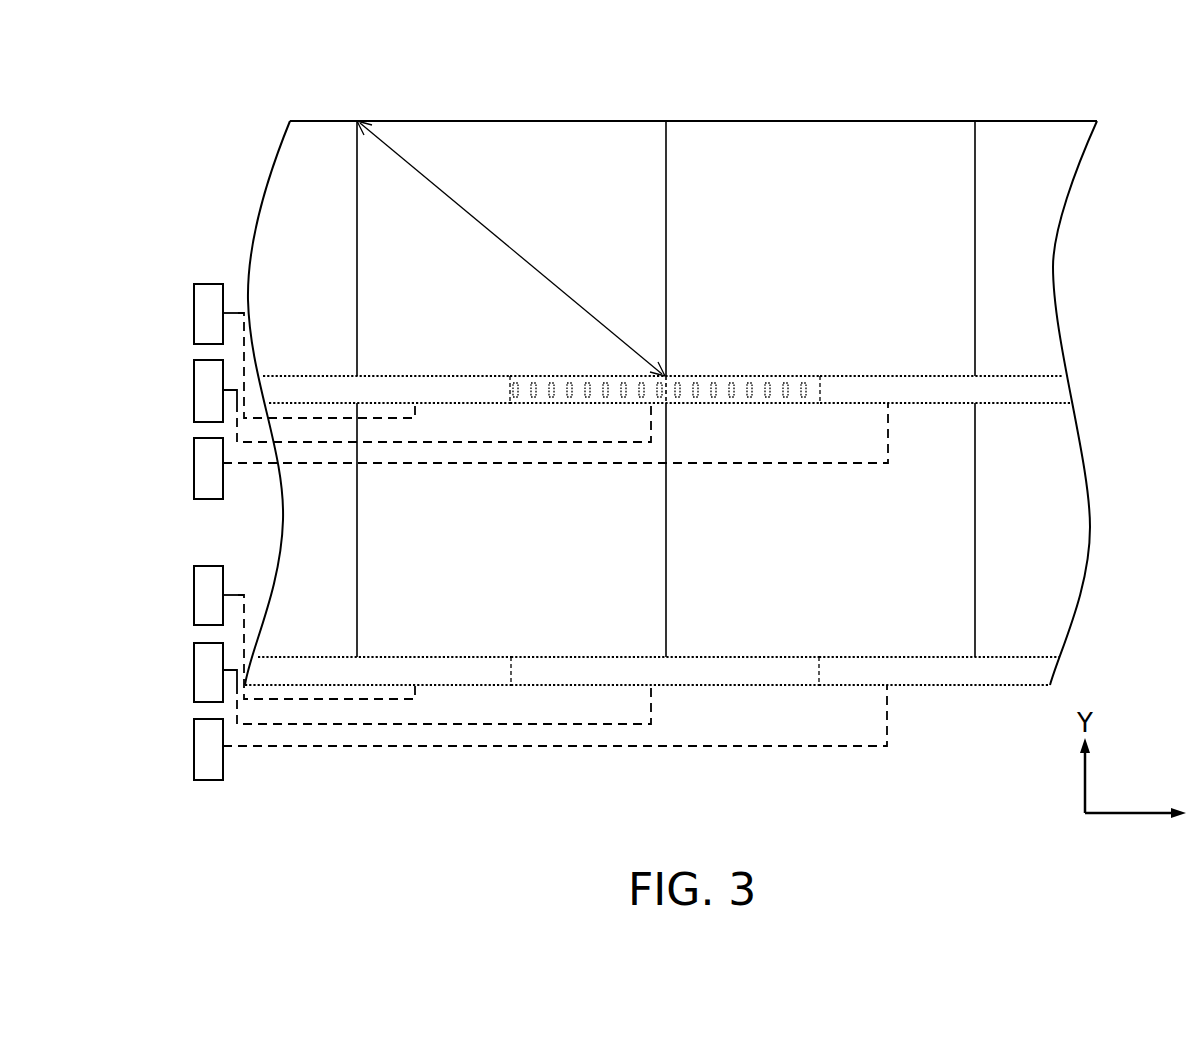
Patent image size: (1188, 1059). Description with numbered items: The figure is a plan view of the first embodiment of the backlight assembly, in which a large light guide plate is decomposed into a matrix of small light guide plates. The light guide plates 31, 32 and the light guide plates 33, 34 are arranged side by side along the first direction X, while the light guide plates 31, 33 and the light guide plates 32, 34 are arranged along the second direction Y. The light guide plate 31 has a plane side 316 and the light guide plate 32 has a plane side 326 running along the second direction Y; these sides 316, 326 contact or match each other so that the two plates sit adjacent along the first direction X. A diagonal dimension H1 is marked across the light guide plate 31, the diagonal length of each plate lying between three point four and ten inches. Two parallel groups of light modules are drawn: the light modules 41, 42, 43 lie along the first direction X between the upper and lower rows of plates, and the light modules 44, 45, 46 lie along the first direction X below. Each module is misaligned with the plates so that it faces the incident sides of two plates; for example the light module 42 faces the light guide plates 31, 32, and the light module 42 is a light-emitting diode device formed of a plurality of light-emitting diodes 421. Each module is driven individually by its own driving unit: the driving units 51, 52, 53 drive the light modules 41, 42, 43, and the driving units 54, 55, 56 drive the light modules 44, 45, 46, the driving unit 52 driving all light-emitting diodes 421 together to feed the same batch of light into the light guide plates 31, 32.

The light guide plate 31 is at (550, 138).
The light guide plate 32 is at (846, 138).
The side 316 is at (651, 246).
The side 326 is at (680, 233).
The light guide plate 33 is at (398, 527).
The light guide plate 34 is at (948, 515).
The light module 41 is at (465, 382).
The light module 42 is at (665, 347).
The light-emitting diodes 421 is at (748, 388).
The light module 43 is at (902, 382).
The light module 44 is at (465, 664).
The light module 45 is at (702, 664).
The light module 46 is at (902, 664).
The driving unit 51 is at (194, 313).
The driving unit 52 is at (194, 390).
The driving unit 53 is at (194, 463).
The driving unit 54 is at (194, 595).
The driving unit 55 is at (194, 670).
The driving unit 56 is at (194, 746).
The diagonal distance H1 is at (511, 248).